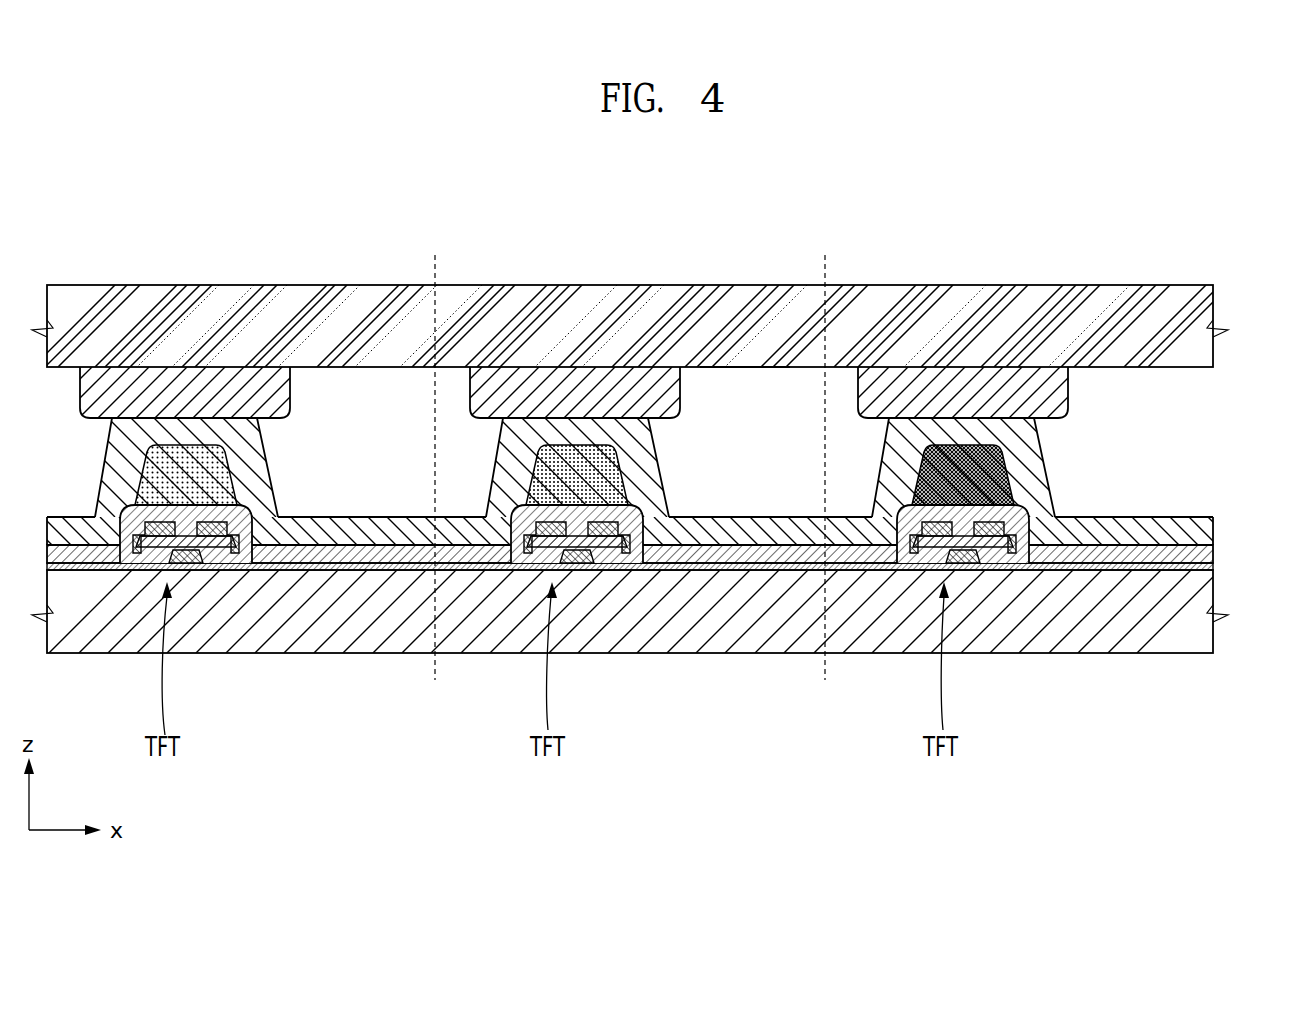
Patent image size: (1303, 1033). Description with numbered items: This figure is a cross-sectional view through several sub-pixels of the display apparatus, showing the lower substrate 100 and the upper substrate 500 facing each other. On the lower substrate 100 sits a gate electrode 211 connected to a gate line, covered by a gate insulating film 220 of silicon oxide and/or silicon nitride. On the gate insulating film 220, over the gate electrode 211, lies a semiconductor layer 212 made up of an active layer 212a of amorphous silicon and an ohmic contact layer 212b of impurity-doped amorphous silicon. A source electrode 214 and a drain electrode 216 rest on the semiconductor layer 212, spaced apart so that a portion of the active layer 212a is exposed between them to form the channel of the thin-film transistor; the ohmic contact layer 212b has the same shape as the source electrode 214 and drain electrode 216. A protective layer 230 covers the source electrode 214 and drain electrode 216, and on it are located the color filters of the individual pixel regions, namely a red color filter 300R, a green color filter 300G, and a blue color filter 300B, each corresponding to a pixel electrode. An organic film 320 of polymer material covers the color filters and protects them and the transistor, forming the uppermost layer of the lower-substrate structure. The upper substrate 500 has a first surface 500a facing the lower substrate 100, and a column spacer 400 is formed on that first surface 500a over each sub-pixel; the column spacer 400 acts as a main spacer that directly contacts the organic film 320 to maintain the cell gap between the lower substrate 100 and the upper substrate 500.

The lower substrate 100 is at (1213, 633).
The gate insulating film 220 is at (1213, 567).
The protective layer 230 is at (1213, 553).
The organic film 320 is at (1213, 530).
The gate electrode 211 is at (185, 552).
The semiconductor layer 212 is at (223, 638).
The active layer 212a is at (206, 548).
The ohmic contact layer 212b is at (222, 540).
The source electrode 214 is at (203, 560).
The drain electrode 216 is at (135, 548).
The red color filter 300R is at (147, 493).
The green color filter 300G is at (528, 508).
The blue color filter 300B is at (915, 508).
The column spacer 400 is at (192, 378).
The upper substrate 500 is at (1213, 346).
The first surface 500a is at (745, 372).